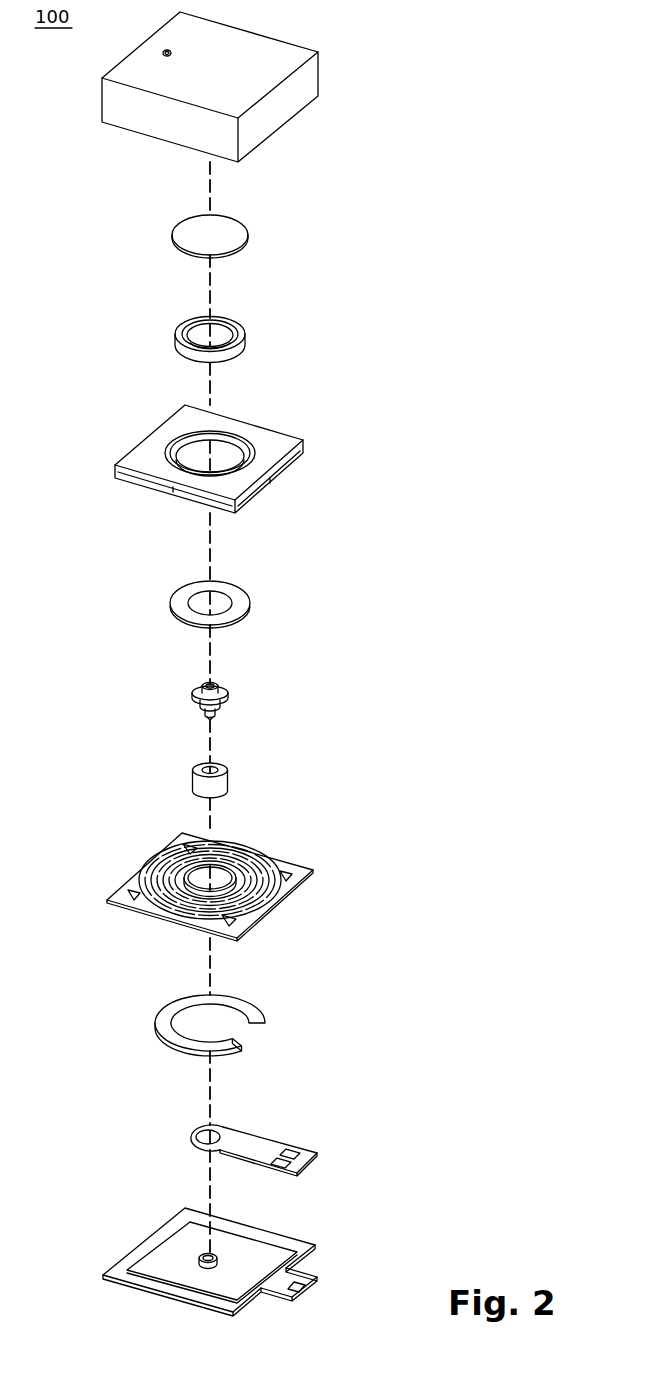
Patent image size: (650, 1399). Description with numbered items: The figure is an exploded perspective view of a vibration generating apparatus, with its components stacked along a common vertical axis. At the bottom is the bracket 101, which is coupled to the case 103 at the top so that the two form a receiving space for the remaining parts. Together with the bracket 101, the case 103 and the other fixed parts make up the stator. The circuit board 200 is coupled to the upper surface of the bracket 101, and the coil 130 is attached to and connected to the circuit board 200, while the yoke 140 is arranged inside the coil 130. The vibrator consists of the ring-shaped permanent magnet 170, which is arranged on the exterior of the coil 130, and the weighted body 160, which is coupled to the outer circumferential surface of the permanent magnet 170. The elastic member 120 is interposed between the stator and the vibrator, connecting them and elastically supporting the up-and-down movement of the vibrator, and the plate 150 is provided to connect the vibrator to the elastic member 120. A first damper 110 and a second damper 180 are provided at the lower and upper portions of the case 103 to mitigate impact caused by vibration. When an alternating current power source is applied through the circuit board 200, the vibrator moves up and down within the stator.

The bracket 101 is at (290, 1258).
The case 103 is at (280, 98).
The first damper 110 is at (252, 1015).
The elastic member 120 is at (313, 870).
The coil 130 is at (218, 785).
The yoke 140 is at (222, 687).
The plate 150 is at (240, 603).
The weighted body 160 is at (273, 450).
The permanent magnet 170 is at (240, 333).
The second damper 180 is at (230, 233).
The circuit board 200 is at (282, 1132).